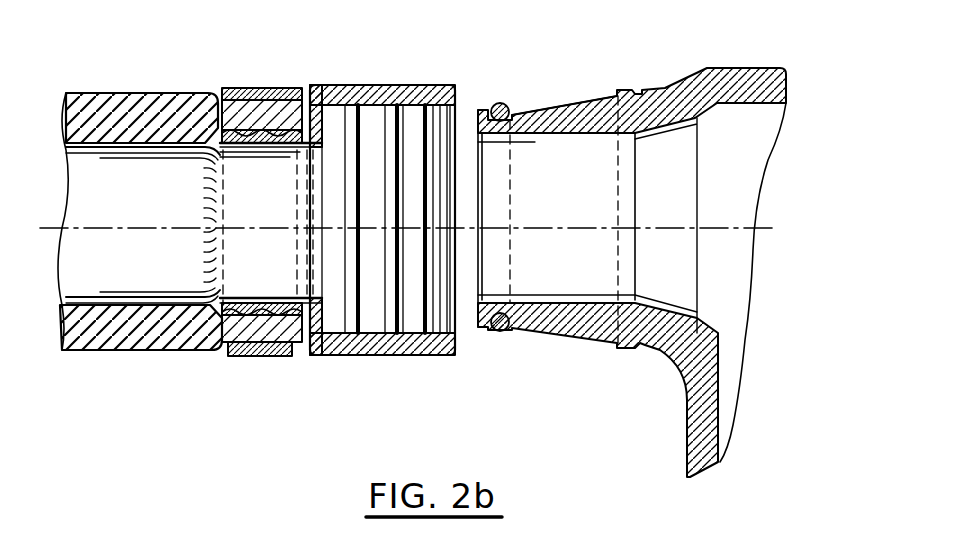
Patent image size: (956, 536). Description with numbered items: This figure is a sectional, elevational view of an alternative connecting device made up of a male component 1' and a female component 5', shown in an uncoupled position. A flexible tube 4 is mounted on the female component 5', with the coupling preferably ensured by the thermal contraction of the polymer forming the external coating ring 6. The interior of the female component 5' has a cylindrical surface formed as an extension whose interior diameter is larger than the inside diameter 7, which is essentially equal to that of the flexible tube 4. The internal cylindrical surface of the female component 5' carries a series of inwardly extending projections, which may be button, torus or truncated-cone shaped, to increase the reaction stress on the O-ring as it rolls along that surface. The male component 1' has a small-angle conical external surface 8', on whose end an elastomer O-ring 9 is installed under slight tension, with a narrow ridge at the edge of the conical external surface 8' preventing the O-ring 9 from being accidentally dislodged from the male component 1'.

The flexible tube 4 is at (133, 120).
The external coating ring 6 is at (266, 90).
The inside diameter 7 is at (279, 149).
The female component 5' is at (384, 190).
The male component 1' is at (632, 255).
The conical external surface 8' is at (564, 65).
The O-ring 9 is at (504, 331).